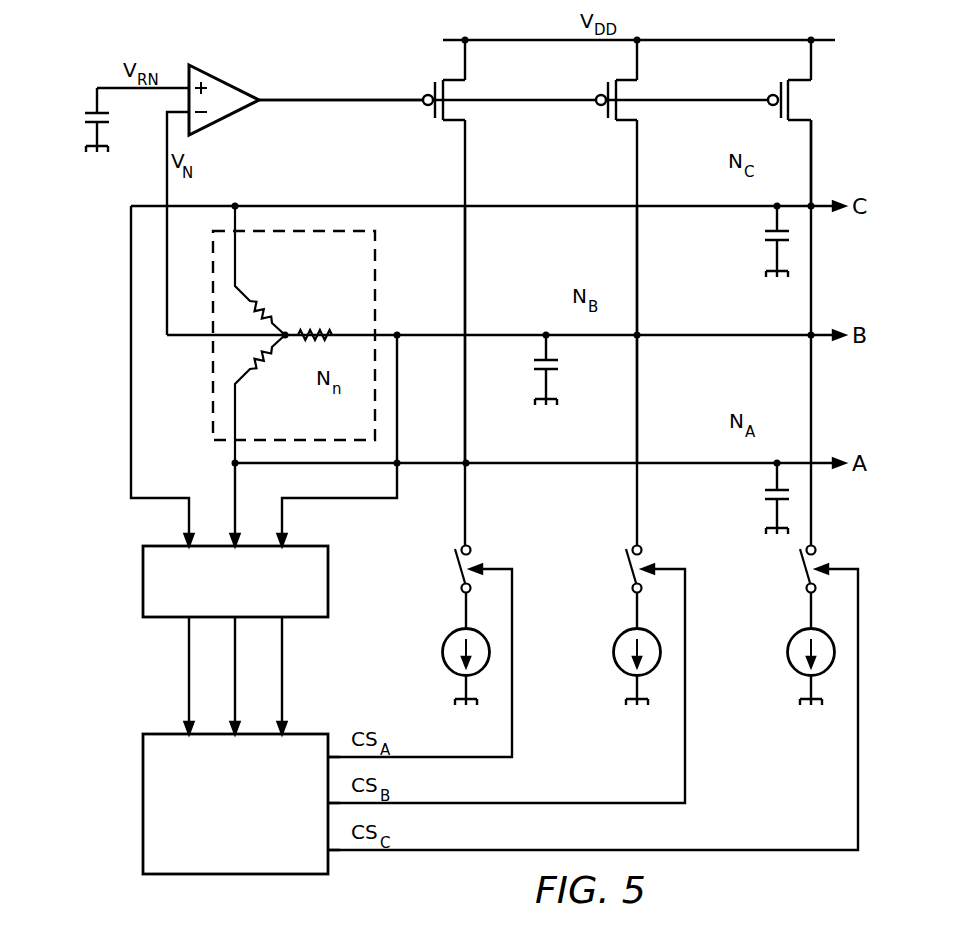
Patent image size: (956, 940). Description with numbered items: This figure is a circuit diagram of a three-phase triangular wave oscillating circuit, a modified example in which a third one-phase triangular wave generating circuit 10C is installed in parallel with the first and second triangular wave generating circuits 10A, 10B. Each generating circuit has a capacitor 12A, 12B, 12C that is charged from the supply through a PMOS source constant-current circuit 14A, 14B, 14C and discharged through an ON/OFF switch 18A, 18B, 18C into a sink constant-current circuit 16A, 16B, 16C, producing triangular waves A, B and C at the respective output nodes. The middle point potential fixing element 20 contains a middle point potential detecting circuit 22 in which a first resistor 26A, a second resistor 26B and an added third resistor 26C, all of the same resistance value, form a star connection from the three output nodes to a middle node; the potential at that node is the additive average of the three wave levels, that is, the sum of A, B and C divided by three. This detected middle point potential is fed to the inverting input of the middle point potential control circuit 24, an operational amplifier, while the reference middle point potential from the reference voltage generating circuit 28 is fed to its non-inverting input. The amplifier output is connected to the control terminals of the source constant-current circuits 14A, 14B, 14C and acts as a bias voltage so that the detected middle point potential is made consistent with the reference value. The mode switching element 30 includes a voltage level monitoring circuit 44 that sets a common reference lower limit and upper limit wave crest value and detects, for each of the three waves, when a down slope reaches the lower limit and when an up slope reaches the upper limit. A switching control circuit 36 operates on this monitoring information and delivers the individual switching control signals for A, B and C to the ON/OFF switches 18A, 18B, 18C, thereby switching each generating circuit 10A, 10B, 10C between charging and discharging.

The reference voltage generating circuit 28 is at (83, 117).
The middle point potential control circuit 24 is at (227, 79).
The middle point potential fixing element 20 is at (331, 166).
The source constant-current circuit 14A is at (436, 84).
The source constant-current circuit 14B is at (609, 84).
The source constant-current circuit 14C is at (782, 84).
The triangular wave generating circuit 10A is at (452, 396).
The triangular wave generating circuit 10B is at (527, 302).
The triangular wave generating circuit 10C is at (703, 169).
The capacitor 12A is at (765, 492).
The capacitor 12B is at (558, 366).
The capacitor 12C is at (765, 234).
The middle point potential detecting circuit 22 is at (272, 334).
The resistor 26A is at (265, 360).
The resistor 26B is at (322, 330).
The resistor 26C is at (263, 312).
The ON/OFF switch 18A is at (455, 567).
The ON/OFF switch 18B is at (626, 567).
The ON/OFF switch 18C is at (800, 567).
The sink constant-current circuit 16A is at (445, 658).
The sink constant-current circuit 16B is at (616, 658).
The sink constant-current circuit 16C is at (790, 658).
The mode switching element 30 is at (340, 684).
The voltage level monitoring circuit 44 is at (143, 583).
The switching control circuit 36 is at (143, 815).